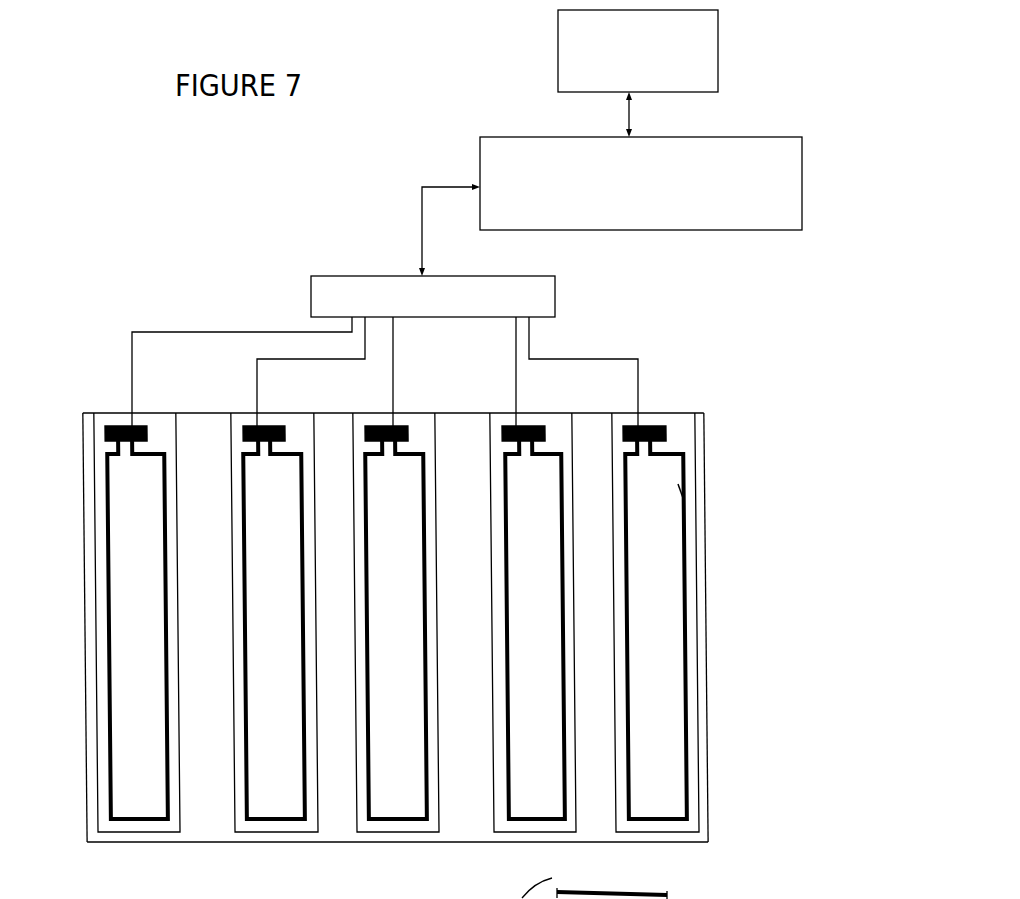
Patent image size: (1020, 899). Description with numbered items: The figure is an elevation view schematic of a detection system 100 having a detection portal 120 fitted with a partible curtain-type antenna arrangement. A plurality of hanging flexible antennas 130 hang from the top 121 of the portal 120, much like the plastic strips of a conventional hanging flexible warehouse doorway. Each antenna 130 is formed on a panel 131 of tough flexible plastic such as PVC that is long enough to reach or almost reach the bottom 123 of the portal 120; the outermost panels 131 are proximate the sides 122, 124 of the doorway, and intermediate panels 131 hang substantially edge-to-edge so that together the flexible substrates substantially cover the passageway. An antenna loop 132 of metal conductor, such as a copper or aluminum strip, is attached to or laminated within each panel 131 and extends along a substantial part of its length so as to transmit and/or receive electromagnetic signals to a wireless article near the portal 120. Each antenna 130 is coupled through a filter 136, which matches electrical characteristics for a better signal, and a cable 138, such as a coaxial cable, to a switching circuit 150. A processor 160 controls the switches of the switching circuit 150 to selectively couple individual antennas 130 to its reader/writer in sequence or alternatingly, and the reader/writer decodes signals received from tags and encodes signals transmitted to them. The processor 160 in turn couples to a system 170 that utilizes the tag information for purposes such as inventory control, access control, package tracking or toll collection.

The detection system 100 is at (200, 221).
The detection portal 120 is at (388, 635).
The top of portal 121 is at (597, 413).
The side of doorway 122 is at (703, 487).
The bottom of doorway 123 is at (207, 845).
The side of doorway 124 is at (85, 727).
The hanging flexible antenna 130 is at (225, 459).
The panel 131 is at (233, 692).
The antenna loop 132 is at (243, 557).
The filter 136 is at (250, 426).
The cable 138 is at (256, 368).
The switching circuit 150 is at (311, 295).
The processor 160 is at (512, 230).
The system 170 is at (558, 59).